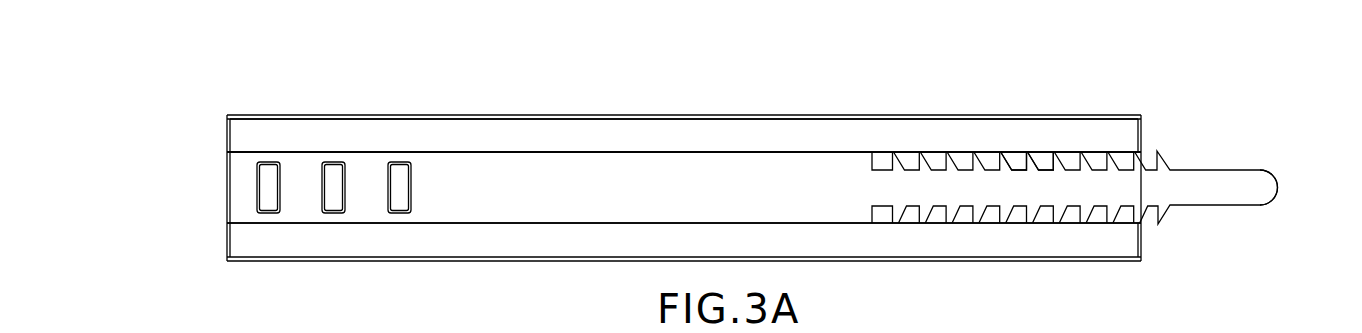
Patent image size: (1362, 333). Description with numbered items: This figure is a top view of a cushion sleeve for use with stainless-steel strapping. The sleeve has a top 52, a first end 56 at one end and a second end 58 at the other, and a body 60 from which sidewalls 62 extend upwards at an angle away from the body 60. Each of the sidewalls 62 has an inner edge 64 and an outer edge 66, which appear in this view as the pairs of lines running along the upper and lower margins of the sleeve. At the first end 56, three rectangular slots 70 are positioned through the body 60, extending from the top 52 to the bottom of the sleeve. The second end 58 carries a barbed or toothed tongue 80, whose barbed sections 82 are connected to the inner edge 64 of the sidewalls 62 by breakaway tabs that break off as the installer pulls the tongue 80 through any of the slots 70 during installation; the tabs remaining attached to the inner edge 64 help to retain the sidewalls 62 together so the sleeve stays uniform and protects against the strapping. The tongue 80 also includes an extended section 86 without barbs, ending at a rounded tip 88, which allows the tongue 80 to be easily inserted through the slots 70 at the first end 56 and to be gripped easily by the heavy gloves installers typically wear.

The top 52 is at (760, 183).
The first end 56 is at (227, 179).
The second end 58 is at (1130, 129).
The body 60 is at (570, 195).
The sidewalls 62 is at (606, 135).
The inner edge 64 is at (669, 153).
The outer edge 66 is at (527, 115).
The slots 70 is at (400, 172).
The tongue 80 is at (968, 185).
The barbed sections 82 is at (1032, 163).
The extended section 86 is at (1221, 185).
The tip 88 is at (1277, 187).